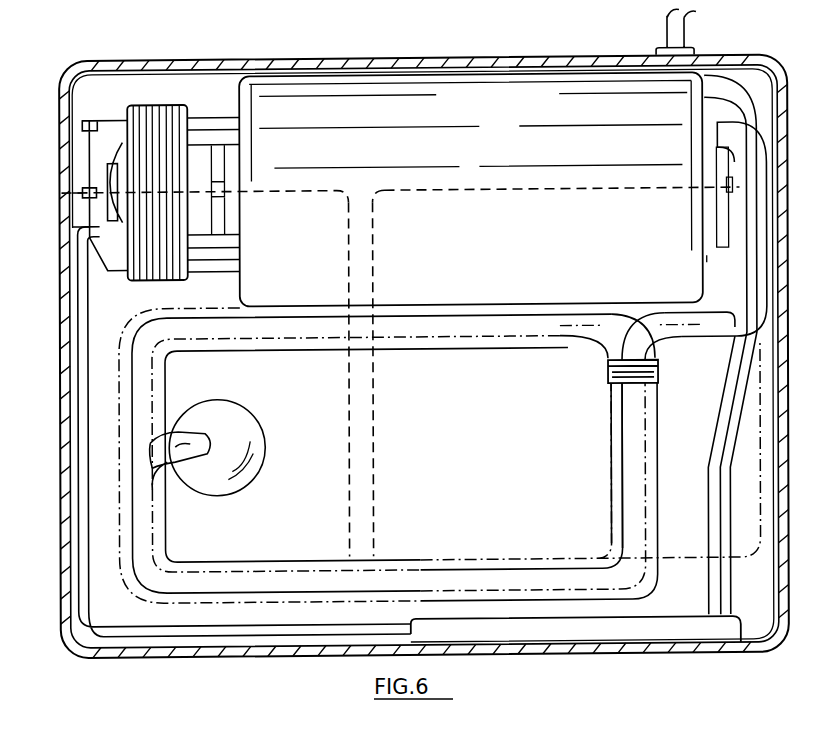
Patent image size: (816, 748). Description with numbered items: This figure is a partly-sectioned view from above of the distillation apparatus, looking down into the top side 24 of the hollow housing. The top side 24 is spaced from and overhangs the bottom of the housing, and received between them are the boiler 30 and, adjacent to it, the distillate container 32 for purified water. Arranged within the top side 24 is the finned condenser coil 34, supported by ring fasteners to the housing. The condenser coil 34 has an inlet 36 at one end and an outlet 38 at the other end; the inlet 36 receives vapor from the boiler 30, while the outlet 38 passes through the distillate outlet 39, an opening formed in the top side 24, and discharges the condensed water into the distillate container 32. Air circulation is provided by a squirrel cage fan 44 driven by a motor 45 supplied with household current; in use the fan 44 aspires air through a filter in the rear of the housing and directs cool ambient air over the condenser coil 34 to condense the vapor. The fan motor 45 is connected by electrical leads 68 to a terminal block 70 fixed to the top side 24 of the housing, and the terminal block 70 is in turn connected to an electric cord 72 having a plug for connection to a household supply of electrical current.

The top side 24 is at (58, 337).
The boiler 30 is at (374, 238).
The distillate container 32 is at (348, 430).
The finned condenser coil 34 is at (620, 450).
The inlet 36 is at (678, 338).
The outlet 38 is at (173, 432).
The distillate outlet 39 is at (213, 440).
The squirrel cage fan 44 is at (333, 75).
The motor 45 is at (163, 103).
The electrical leads 68 is at (735, 412).
The terminal block 70 is at (645, 619).
The electric cord 72 is at (667, 31).